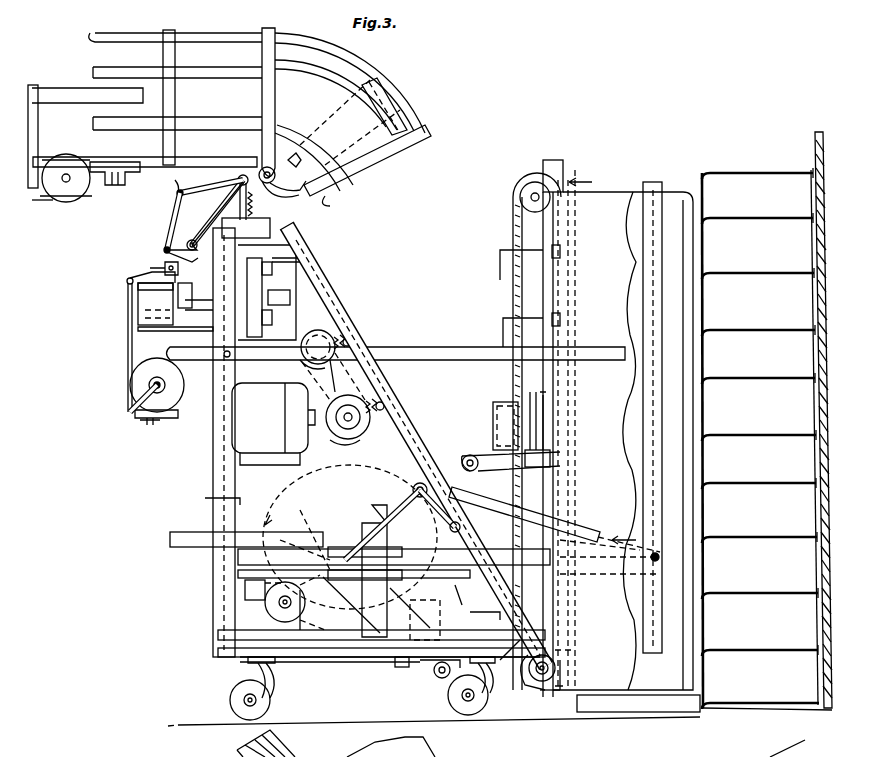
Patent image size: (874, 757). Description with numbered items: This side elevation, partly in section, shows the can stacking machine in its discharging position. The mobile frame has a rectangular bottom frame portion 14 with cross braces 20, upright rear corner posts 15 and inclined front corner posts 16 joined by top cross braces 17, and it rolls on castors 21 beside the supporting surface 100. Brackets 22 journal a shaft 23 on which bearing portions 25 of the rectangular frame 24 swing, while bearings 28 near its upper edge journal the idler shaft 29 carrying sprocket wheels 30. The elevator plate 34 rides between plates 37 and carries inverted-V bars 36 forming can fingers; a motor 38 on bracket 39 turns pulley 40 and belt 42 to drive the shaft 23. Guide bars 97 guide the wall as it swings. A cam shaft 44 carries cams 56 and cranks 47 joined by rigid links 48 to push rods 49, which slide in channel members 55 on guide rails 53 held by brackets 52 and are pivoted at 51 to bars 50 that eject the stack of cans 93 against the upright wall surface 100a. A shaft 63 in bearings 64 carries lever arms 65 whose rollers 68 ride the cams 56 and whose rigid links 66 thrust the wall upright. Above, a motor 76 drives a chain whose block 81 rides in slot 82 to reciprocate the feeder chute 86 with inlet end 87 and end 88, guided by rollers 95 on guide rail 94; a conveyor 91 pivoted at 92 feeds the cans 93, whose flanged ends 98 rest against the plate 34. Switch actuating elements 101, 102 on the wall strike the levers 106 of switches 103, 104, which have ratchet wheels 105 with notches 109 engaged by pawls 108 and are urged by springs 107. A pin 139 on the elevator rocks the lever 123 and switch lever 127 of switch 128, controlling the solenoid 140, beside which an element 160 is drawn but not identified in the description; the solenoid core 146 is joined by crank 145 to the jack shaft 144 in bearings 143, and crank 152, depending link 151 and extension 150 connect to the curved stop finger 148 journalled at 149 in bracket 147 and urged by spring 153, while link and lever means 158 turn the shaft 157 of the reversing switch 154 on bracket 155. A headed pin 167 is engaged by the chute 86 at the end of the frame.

The bottom frame portion 14 is at (218, 653).
The rear corner posts 15 is at (212, 502).
The front corner posts 16 is at (416, 421).
The top cross braces 17 is at (306, 259).
The cross braces 20 is at (352, 662).
The castors 21 is at (272, 703).
The brackets 22 is at (535, 686).
The shaft 23 is at (568, 659).
The rectangular frame 24 is at (591, 430).
The bearing portions 25 is at (552, 702).
The bearings 28 is at (565, 170).
The shaft 29 is at (520, 190).
The sprocket wheels 30 is at (513, 212).
The plate 34 is at (575, 696).
The bars 36 is at (655, 712).
The plates 37 is at (655, 185).
The electric motor 38 is at (265, 598).
The bracket 39 is at (218, 635).
The belt pulley 40 is at (290, 532).
The belt 42 is at (470, 622).
The cam shaft 44 is at (345, 588).
The crank 47 is at (398, 501).
The rigid link 48 is at (492, 510).
The push rod 49 is at (495, 552).
The bar 50 is at (647, 492).
The pivotal connection 51 is at (660, 555).
The bracket 52 is at (245, 586).
The guide rail 53 is at (424, 602).
The channel member 55 is at (346, 547).
The cam 56 is at (302, 488).
The shaft 63 is at (434, 676).
The bearings 64 is at (397, 669).
The lever arms 65 is at (467, 592).
The rigid link 66 is at (480, 458).
The roller 68 is at (450, 528).
The electric motor 76 is at (273, 424).
The block 81 is at (246, 228).
The slot 82 is at (258, 338).
The feeder chute 86 is at (403, 98).
The inlet end 87 is at (160, 50).
The angularly disposed end 88 is at (418, 146).
The conveyor 91 is at (62, 204).
The pivotal connection 92 is at (108, 177).
The cans 93 is at (406, 110).
The guide rail 94 is at (285, 297).
The rollers 95 is at (272, 268).
The guide bars 97 is at (368, 350).
The open flanged ends 98 is at (330, 204).
The supporting surface 100 is at (567, 730).
The upright wall surface 100a is at (815, 138).
The switch actuating element 101 is at (500, 250).
The switch actuating element 102 is at (505, 318).
The switch 103 is at (300, 366).
The switch 104 is at (357, 437).
The ratchet wheel 105 is at (342, 376).
The actuating arm 106 is at (350, 334).
The contractile coiled spring 107 is at (352, 340).
The pawl 108 is at (315, 330).
The notches 109 is at (330, 453).
The lever 123 is at (545, 413).
The switch lever 127 is at (540, 401).
The switch 128 is at (500, 402).
The pin 139 is at (787, 746).
The solenoid 140 is at (135, 308).
The bearings 143 is at (205, 232).
The jack shaft 144 is at (172, 220).
The crank 145 is at (166, 252).
The core 146 is at (150, 268).
The bracket 147 is at (238, 178).
The curved stop finger 148 is at (300, 200).
The journal 149 is at (262, 165).
The extension 150 is at (180, 178).
The depending link 151 is at (177, 192).
The crank 152 is at (164, 247).
The spring 153 is at (258, 202).
The reversing switch 154 is at (135, 377).
The bracket 155 is at (160, 422).
The shaft 157 is at (135, 395).
The link and lever means 158 is at (126, 279).
The solenoid 160 is at (138, 296).
The headed pin 167 is at (295, 170).